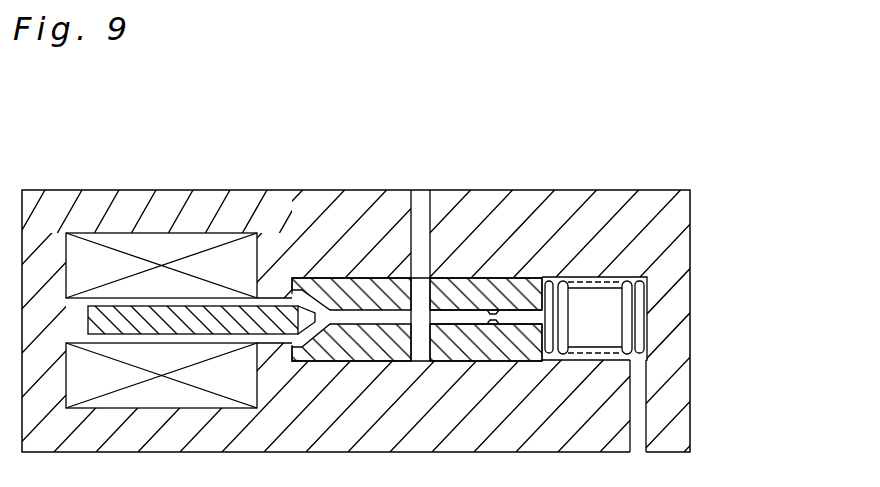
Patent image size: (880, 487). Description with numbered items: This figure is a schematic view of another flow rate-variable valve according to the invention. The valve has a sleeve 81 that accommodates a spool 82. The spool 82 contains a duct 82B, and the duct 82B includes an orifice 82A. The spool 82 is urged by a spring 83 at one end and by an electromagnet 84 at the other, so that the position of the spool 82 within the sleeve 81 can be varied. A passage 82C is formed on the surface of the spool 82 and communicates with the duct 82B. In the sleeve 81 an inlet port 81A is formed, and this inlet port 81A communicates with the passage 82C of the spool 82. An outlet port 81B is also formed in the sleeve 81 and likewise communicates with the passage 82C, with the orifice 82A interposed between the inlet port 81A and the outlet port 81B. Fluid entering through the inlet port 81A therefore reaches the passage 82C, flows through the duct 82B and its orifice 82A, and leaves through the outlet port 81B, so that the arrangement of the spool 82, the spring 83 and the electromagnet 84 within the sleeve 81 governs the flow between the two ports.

The sleeve 81 is at (613, 197).
The inlet port 81A is at (414, 190).
The outlet port 81B is at (646, 438).
The spool 82 is at (325, 295).
The orifice 82A is at (505, 308).
The duct 82B is at (532, 300).
The passage 82C is at (378, 287).
The spring 83 is at (620, 274).
The electromagnet 84 is at (193, 246).